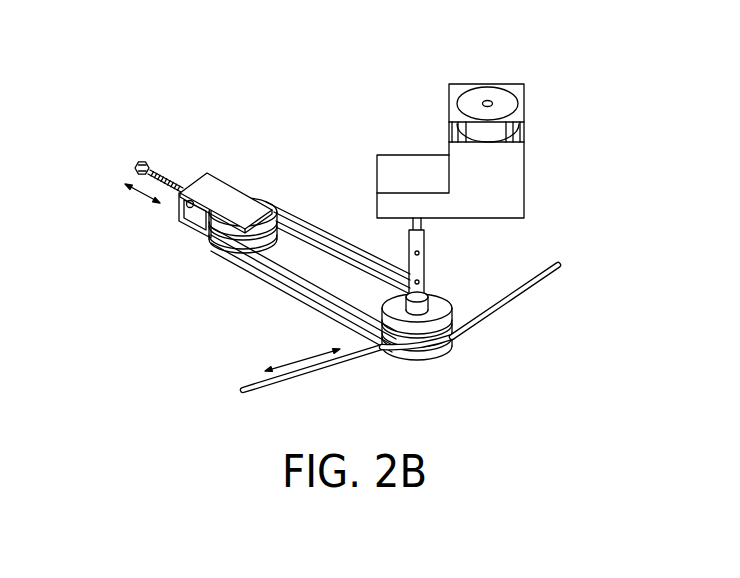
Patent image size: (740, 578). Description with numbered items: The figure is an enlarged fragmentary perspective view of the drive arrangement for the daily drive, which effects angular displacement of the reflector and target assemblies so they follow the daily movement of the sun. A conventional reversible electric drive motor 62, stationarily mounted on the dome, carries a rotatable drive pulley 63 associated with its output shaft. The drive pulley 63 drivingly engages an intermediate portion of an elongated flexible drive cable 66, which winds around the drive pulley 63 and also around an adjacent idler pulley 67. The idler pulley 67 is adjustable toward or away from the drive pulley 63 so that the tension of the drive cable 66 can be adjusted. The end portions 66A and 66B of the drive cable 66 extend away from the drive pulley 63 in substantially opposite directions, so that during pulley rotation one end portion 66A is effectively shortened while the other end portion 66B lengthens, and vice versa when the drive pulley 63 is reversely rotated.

The reversible electric drive motor 62 is at (520, 103).
The drive pulley 63 is at (440, 302).
The drive cable 66 is at (412, 346).
The end portion of the drive cable 66A is at (300, 375).
The end portion of the drive cable 66B is at (508, 307).
The idler pulley 67 is at (258, 197).